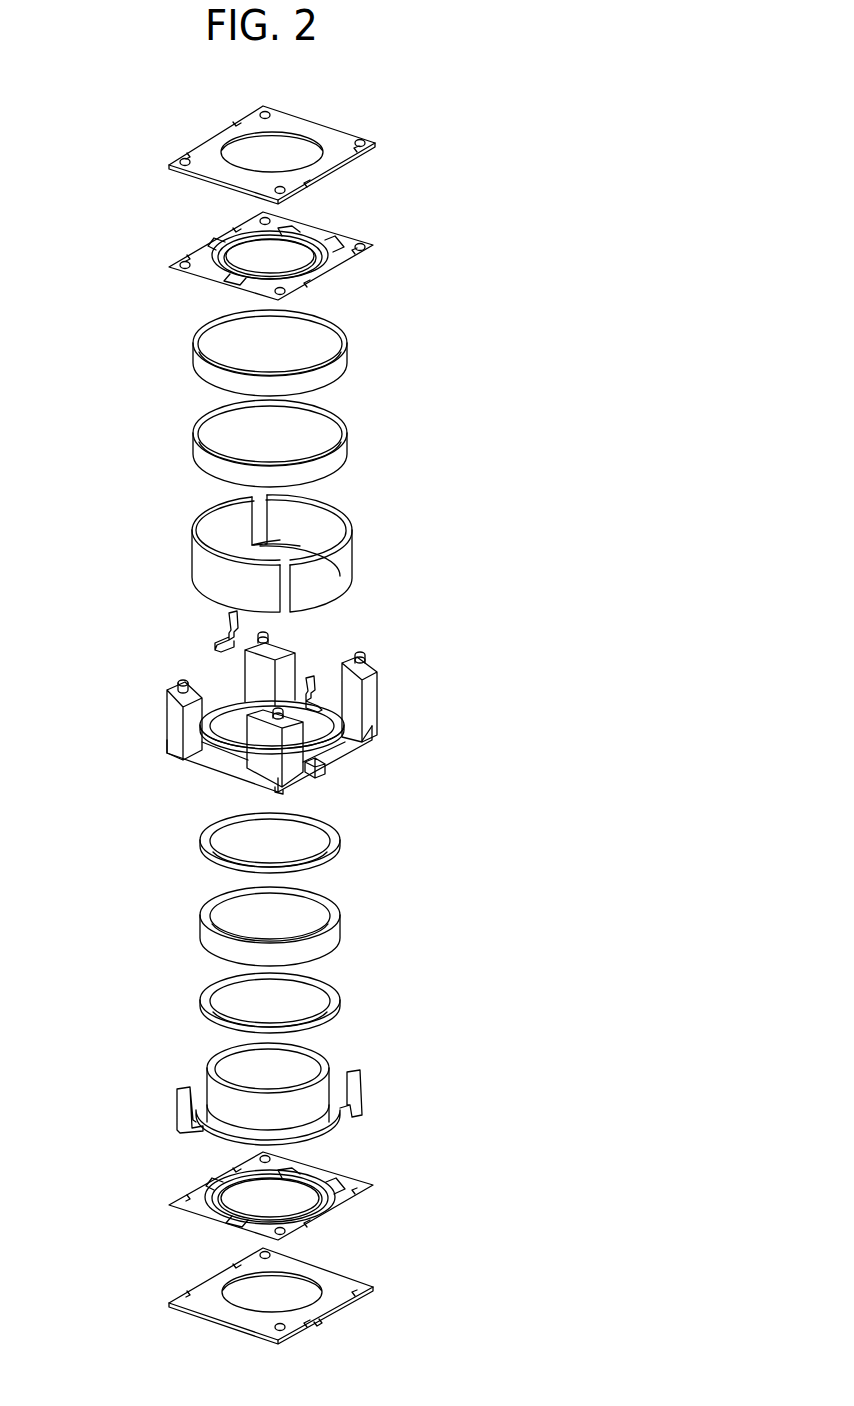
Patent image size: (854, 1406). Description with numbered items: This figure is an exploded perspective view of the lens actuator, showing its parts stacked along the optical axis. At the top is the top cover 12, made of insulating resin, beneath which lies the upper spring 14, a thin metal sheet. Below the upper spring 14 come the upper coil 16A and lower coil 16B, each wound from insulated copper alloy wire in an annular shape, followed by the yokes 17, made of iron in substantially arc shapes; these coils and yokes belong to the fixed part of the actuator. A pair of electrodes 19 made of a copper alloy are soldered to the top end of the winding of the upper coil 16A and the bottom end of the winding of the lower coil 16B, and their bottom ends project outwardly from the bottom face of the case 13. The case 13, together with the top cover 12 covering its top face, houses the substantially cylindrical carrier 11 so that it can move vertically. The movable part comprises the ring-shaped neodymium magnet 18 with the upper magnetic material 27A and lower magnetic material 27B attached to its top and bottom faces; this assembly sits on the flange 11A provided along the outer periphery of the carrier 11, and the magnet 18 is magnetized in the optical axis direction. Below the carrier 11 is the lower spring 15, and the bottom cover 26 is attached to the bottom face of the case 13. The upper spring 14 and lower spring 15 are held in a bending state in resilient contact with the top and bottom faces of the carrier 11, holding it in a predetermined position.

The top cover 12 is at (378, 158).
The upper spring 14 is at (378, 260).
The upper coil 16A is at (378, 367).
The lower coil 16B is at (370, 442).
The yokes 17 is at (262, 600).
The electrodes 19 is at (303, 690).
The case 13 is at (384, 717).
The upper magnetic material 27A is at (350, 855).
The magnet 18 is at (352, 937).
The lower magnetic material 27B is at (352, 1015).
The carrier 11 is at (317, 1095).
The flange 11A is at (203, 1128).
The lower spring 15 is at (350, 1213).
The bottom cover 26 is at (365, 1298).